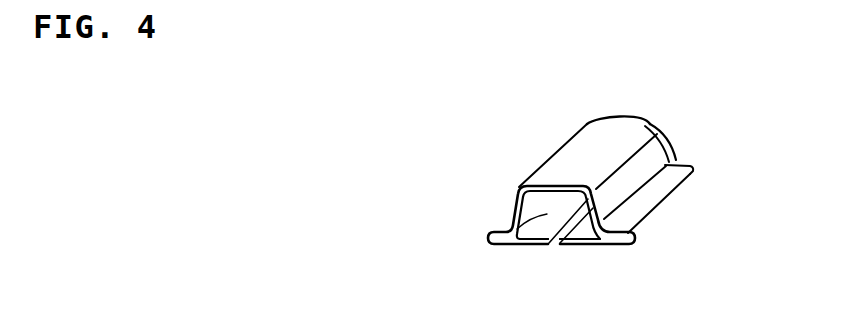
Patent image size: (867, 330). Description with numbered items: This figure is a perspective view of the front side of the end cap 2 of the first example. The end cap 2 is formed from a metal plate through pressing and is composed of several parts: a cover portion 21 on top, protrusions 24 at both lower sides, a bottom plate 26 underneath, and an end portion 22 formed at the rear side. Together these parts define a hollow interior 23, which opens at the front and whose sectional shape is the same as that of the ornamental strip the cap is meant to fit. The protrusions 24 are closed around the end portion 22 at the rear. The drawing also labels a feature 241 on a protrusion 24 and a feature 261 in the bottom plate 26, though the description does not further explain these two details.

The end cap 2 is at (582, 194).
The cover portion 21 is at (600, 142).
The end portion 22 is at (667, 135).
The hollow interior 23 is at (558, 206).
The protrusions 24 is at (490, 237).
The tab of leg 241 is at (692, 163).
The bottom plate 26 is at (527, 242).
The slot 261 is at (552, 243).